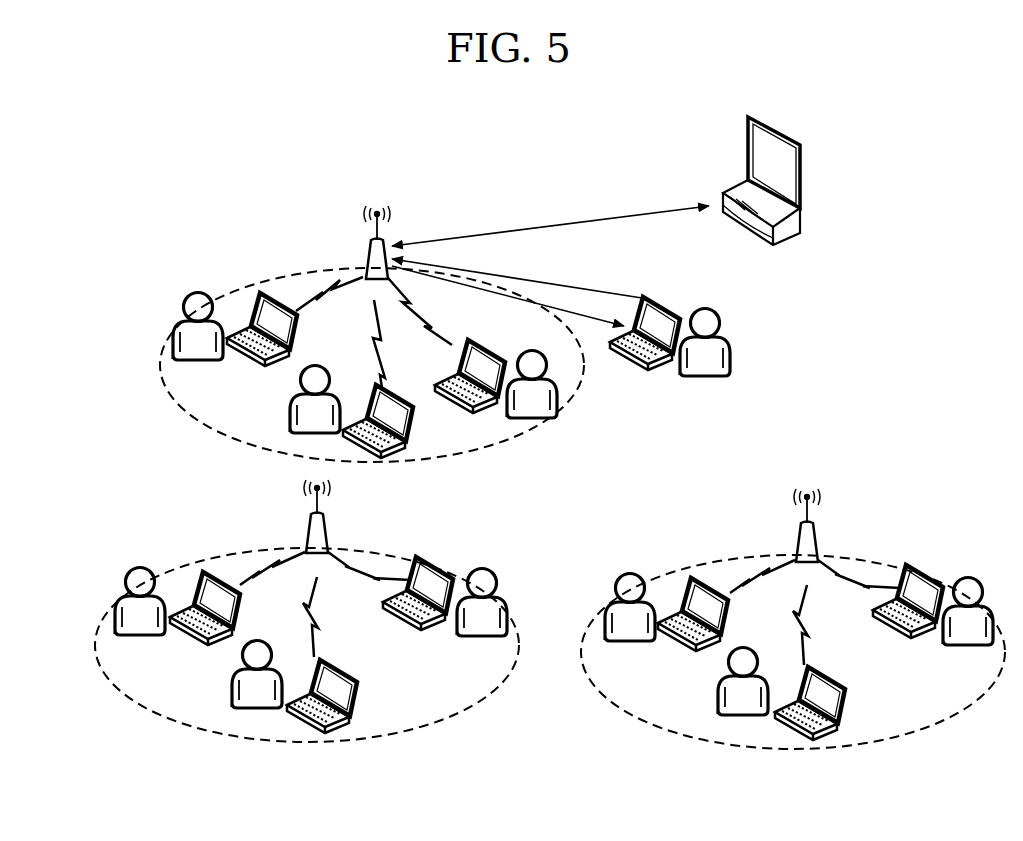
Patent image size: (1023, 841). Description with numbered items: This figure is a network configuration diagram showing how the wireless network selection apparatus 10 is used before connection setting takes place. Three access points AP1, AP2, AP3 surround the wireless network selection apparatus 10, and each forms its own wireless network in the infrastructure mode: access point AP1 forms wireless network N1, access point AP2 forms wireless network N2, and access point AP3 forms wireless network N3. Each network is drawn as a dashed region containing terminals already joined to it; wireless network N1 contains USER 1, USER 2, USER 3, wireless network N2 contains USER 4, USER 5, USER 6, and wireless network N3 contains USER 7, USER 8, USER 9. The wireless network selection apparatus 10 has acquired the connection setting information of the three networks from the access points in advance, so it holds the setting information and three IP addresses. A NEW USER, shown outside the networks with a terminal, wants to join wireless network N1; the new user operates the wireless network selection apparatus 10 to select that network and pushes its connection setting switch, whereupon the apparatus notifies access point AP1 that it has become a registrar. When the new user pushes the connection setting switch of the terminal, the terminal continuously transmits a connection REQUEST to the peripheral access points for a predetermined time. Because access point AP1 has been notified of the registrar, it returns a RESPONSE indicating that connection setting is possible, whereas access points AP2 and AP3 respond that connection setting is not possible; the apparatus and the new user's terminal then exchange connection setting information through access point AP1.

The wireless network selection apparatus 10 is at (787, 136).
The wireless network N1 is at (247, 280).
The wireless network N2 is at (193, 552).
The wireless network N3 is at (683, 559).
The access point AP1 is at (368, 246).
The access point AP2 is at (307, 533).
The access point AP3 is at (797, 541).
The user USER 1 is at (172, 308).
The user USER 2 is at (291, 393).
The user USER 3 is at (558, 398).
The user USER 4 is at (135, 640).
The user USER 5 is at (247, 709).
The user USER 6 is at (467, 636).
The user USER 7 is at (630, 645).
The user USER 8 is at (737, 717).
The user USER 9 is at (955, 643).
The new user NEW USER is at (732, 328).
The connection request REQUEST is at (483, 270).
The response RESPONSE is at (580, 300).